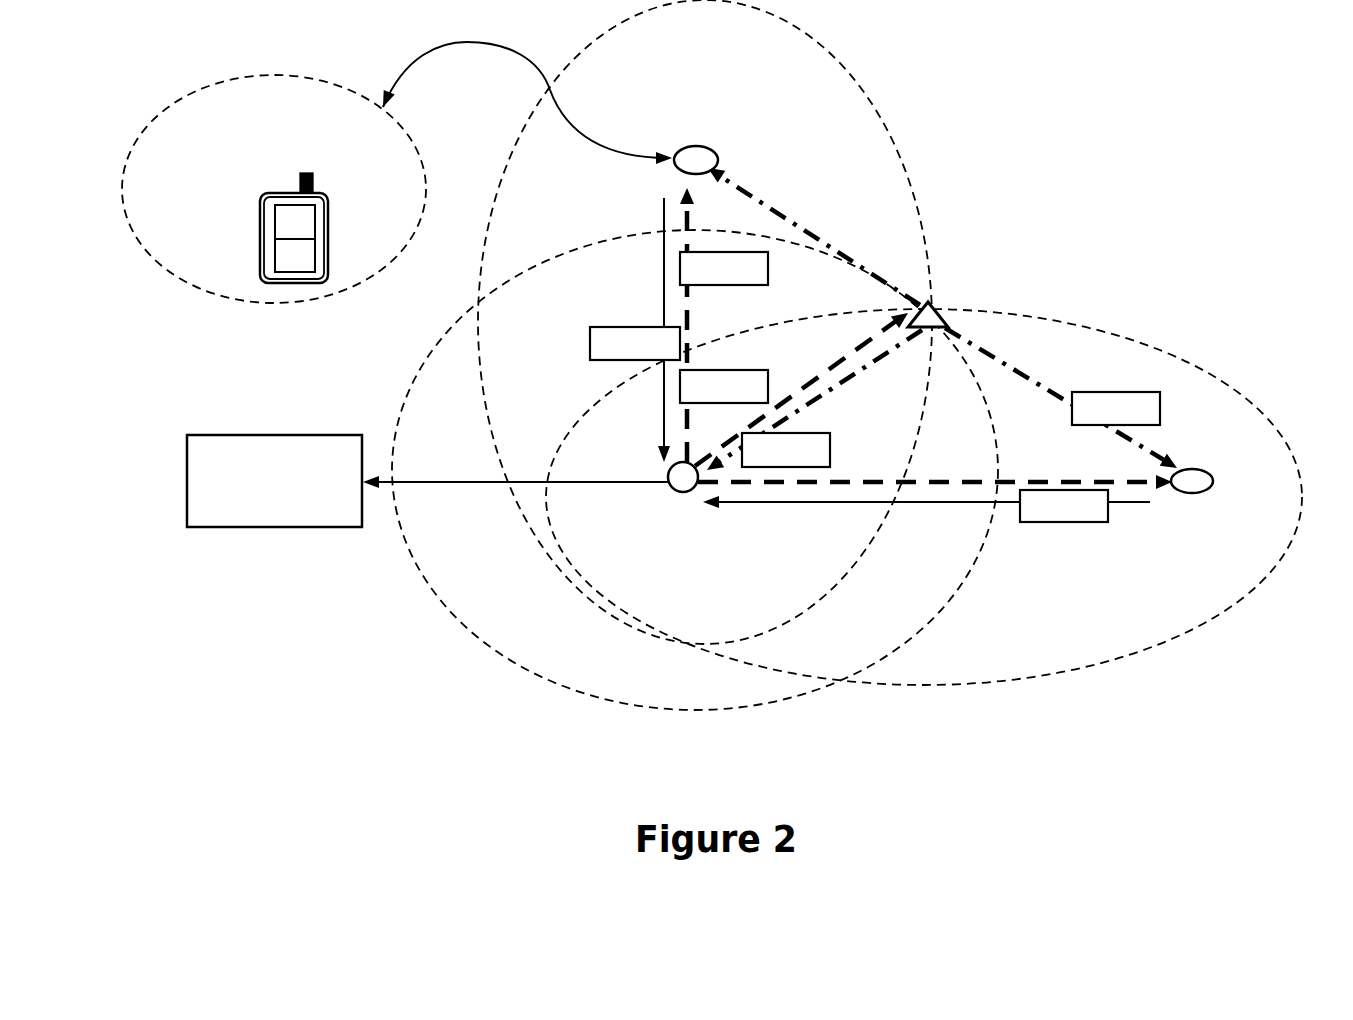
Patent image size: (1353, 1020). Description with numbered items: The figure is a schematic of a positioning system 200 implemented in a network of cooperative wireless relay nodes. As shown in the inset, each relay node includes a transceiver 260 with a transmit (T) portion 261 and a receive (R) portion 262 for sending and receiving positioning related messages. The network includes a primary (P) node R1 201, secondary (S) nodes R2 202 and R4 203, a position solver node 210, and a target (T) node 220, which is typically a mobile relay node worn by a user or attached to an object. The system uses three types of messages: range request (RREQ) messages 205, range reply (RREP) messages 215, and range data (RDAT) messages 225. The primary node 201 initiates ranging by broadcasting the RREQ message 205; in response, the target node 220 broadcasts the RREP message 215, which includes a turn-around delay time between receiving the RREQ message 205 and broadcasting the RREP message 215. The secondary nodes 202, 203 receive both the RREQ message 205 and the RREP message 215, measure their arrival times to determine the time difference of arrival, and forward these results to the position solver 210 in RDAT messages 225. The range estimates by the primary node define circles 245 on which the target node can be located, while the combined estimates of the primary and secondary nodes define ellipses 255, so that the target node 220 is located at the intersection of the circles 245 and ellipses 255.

The positioning system 200 is at (712, 404).
The primary node 201 is at (677, 491).
The secondary node 202 is at (683, 146).
The secondary node 203 is at (1247, 453).
The range request (RREQ) message 205 is at (703, 368).
The position solver node 210 is at (292, 435).
The range reply (RREP) message 215 is at (790, 218).
The target node 220 is at (938, 307).
The range data (RDAT) message 225 is at (660, 327).
The circle 245 is at (452, 612).
The ellipse 255 is at (920, 222).
The transceiver 260 is at (290, 206).
The transmit (T) 261 is at (315, 217).
The receive (R) 262 is at (275, 260).